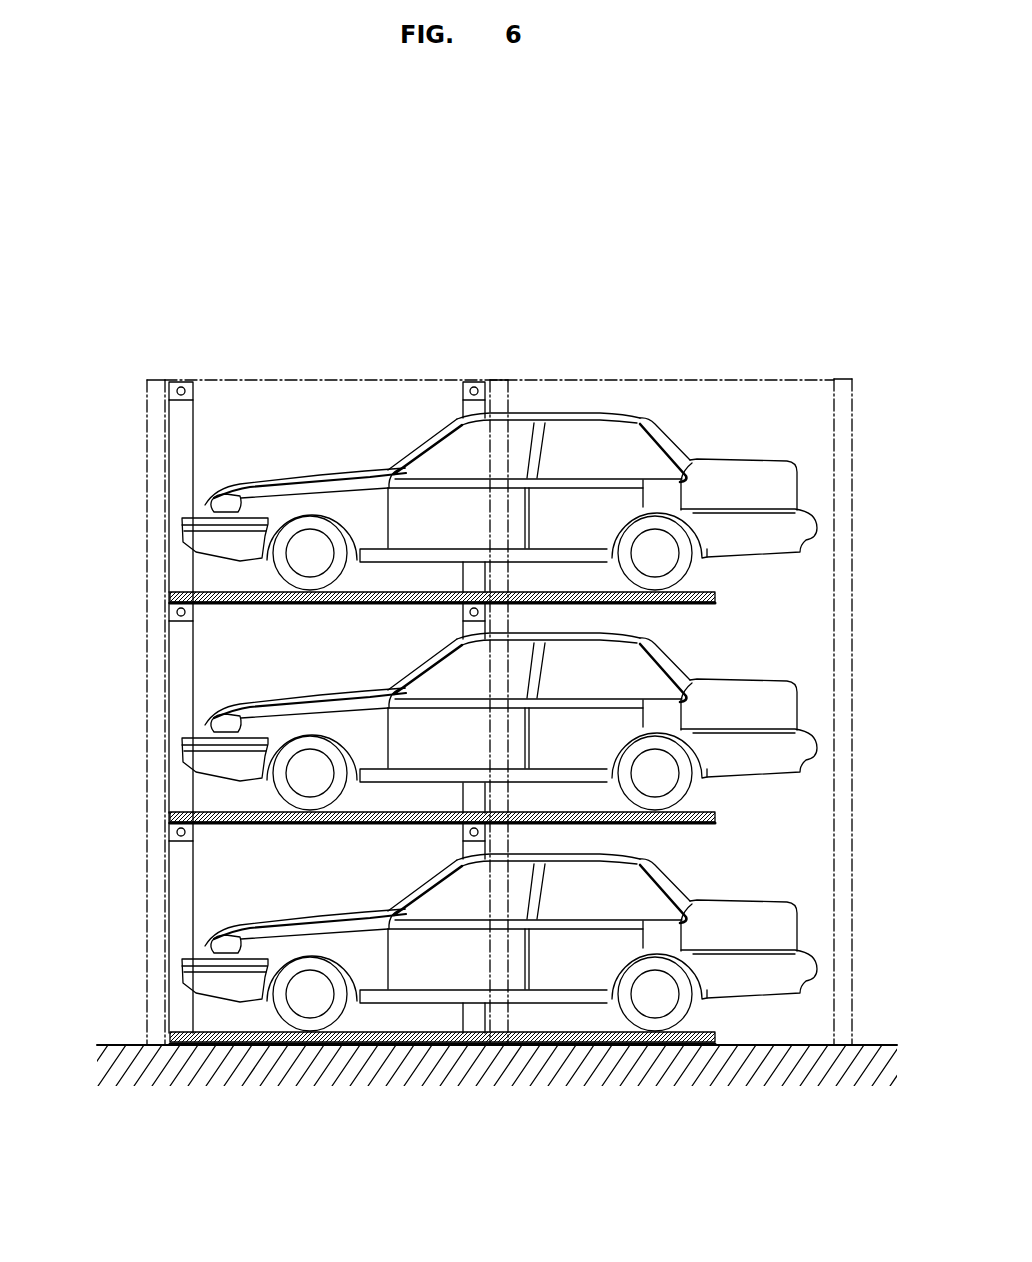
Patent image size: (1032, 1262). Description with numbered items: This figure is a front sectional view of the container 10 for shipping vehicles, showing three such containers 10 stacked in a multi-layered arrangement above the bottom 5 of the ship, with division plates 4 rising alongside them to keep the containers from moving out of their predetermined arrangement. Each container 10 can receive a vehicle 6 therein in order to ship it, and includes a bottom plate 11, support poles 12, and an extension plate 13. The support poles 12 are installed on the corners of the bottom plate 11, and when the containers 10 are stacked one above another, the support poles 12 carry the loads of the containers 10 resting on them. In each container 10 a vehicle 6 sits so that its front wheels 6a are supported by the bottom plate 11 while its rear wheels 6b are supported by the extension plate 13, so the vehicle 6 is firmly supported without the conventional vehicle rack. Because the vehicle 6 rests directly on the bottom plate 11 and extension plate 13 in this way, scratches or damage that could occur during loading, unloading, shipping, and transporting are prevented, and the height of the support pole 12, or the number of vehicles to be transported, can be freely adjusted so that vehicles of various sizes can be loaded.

The division plate 4 is at (157, 379).
The bottom of the ship 5 is at (111, 1045).
The vehicle 6 is at (785, 458).
The front wheels 6a is at (302, 540).
The rear wheels 6b is at (672, 543).
The container for shipping vehicles 10 is at (124, 471).
The bottom plate 11 is at (356, 604).
The support pole 12 is at (172, 437).
The extension plate 13 is at (715, 596).